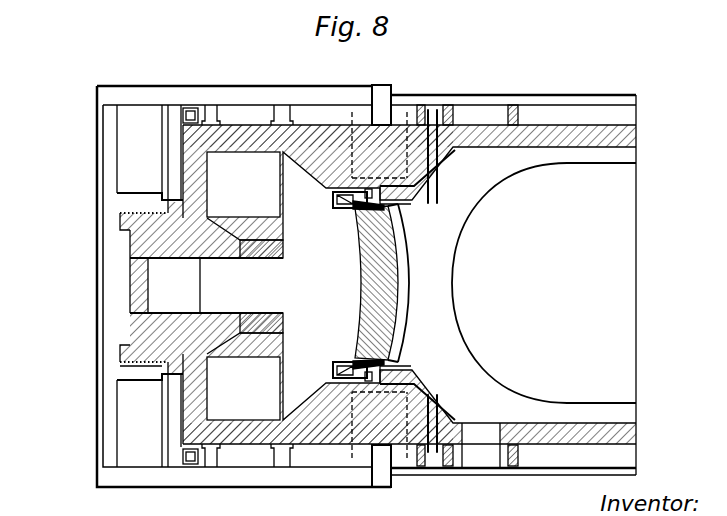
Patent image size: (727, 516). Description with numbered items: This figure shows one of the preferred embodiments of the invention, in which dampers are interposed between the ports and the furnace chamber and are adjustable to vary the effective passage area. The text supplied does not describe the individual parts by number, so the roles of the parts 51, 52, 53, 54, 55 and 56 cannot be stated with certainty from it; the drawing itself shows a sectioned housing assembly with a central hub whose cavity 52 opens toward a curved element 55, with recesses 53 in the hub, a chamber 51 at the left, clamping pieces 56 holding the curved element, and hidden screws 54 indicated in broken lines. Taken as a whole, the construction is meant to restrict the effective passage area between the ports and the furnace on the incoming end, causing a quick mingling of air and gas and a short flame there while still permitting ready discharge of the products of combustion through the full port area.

The central chamber 51 is at (162, 283).
The central cavity 52 is at (206, 286).
The annular recesses 53 is at (222, 176).
The screws 54 is at (376, 153).
The lens 55 is at (385, 280).
The clamping rings 56 is at (340, 210).